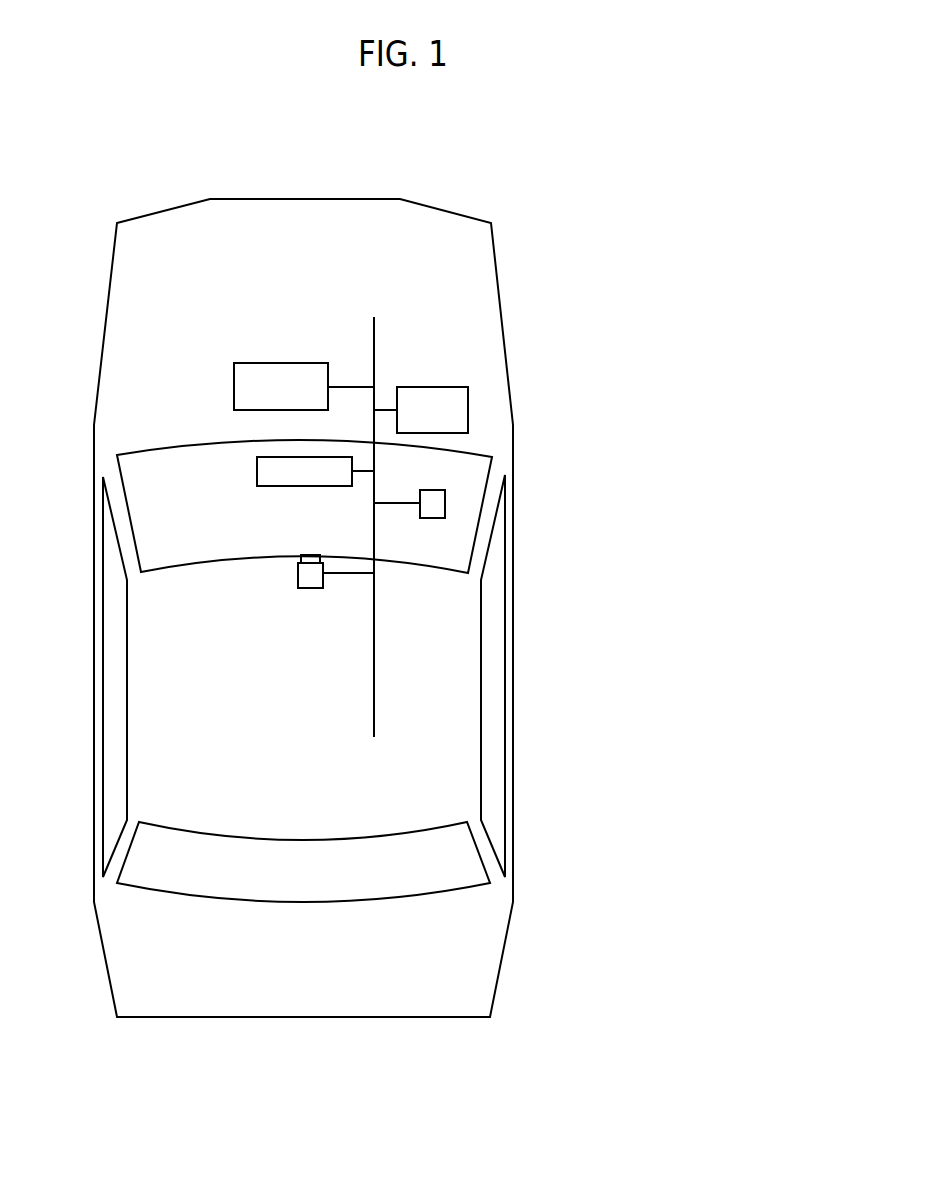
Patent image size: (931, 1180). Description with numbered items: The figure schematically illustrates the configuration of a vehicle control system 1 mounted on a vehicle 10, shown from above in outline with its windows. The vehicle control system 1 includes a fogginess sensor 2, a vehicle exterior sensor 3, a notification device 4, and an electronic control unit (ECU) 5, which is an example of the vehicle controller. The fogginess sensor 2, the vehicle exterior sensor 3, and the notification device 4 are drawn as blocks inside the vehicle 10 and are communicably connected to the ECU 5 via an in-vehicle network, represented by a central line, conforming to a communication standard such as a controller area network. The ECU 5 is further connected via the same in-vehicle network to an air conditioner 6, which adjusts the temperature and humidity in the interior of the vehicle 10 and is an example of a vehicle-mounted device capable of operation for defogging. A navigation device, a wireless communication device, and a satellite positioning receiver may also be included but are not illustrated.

The vehicle control system 1 is at (439, 608).
The vehicle 10 is at (515, 863).
The fogginess sensor 2 is at (424, 518).
The vehicle exterior sensor 3 is at (300, 589).
The notification device 4 is at (257, 474).
The electronic control unit (ECU) 5 is at (440, 387).
The air conditioner 6 is at (234, 378).